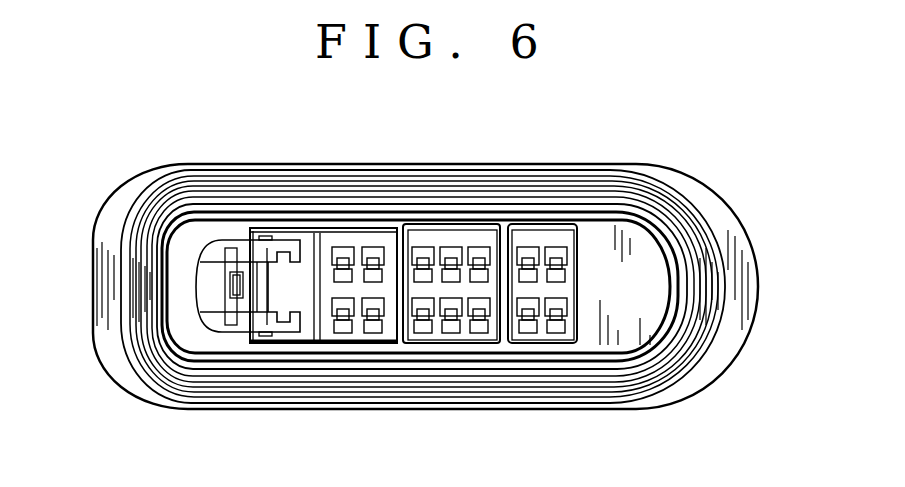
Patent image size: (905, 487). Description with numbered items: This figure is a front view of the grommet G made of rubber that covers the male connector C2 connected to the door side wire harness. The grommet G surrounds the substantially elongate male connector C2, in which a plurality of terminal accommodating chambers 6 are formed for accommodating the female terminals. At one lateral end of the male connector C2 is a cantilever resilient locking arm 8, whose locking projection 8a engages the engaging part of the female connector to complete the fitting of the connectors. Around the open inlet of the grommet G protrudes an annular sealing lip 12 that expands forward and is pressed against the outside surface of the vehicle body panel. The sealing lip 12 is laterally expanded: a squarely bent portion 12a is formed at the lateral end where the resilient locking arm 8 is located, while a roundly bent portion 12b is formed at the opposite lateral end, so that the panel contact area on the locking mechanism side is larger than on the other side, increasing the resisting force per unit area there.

The grommet G is at (647, 163).
The annular sealing lip 12 is at (358, 385).
The squarely bent portion 12a is at (130, 272).
The roundly bent portion 12b is at (707, 272).
The resilient locking arm 8 is at (265, 270).
The locking projection 8a is at (233, 288).
The terminal accommodating chambers 6 is at (533, 313).
The male connector C2 is at (587, 317).